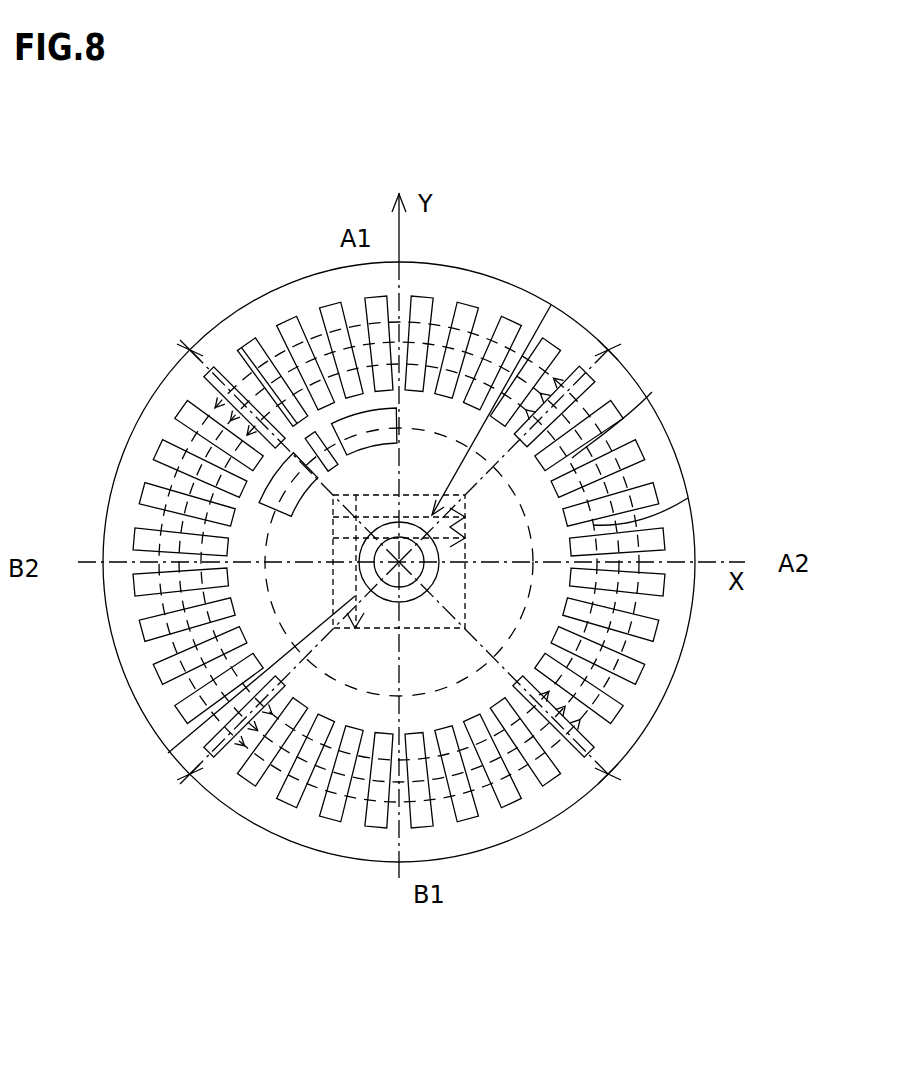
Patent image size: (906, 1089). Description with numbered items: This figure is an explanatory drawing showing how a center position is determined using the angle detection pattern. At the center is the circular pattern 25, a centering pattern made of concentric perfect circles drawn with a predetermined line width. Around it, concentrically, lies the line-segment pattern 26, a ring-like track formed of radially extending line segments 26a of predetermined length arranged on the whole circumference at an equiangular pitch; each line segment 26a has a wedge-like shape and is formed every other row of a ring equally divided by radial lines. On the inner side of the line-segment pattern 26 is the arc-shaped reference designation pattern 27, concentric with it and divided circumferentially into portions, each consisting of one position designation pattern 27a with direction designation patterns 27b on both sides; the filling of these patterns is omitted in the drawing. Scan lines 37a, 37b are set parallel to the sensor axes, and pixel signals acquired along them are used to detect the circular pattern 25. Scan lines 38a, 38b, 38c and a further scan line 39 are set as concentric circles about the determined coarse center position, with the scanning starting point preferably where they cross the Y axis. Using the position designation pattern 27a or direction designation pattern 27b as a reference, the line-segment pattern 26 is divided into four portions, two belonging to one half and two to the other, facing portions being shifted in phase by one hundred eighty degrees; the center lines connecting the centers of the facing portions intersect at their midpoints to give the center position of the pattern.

The circular pattern 25 is at (407, 604).
The line-segment pattern 26 is at (654, 627).
The line segment 26a is at (256, 337).
The reference designation pattern 27 is at (287, 522).
The position designation pattern 27a is at (250, 343).
The direction designation pattern 27b is at (396, 426).
The scan line 37a is at (551, 305).
The scan line 37b is at (168, 753).
The scan line 38a is at (612, 350).
The scan line 38b is at (652, 392).
The scan line 38c is at (688, 498).
The scan line 39 is at (323, 673).